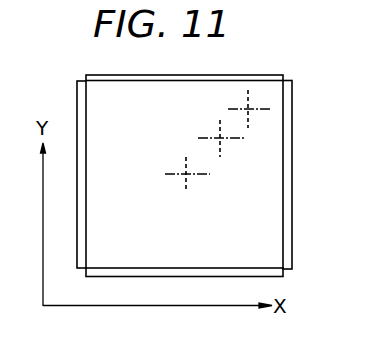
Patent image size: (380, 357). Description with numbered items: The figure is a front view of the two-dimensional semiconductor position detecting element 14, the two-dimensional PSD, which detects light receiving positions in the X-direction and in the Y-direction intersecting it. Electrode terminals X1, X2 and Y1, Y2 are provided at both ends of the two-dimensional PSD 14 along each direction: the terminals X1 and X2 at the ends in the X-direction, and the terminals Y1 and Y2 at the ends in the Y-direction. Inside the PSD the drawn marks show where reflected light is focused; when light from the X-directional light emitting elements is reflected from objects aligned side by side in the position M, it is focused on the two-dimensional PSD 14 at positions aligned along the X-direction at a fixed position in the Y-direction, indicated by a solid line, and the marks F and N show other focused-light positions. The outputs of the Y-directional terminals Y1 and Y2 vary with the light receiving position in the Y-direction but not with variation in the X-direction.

The two-dimensional semiconductor position detecting element 14 is at (300, 90).
The electrode terminal X1 is at (77, 106).
The electrode terminal X2 is at (293, 147).
The electrode terminal Y1 is at (240, 75).
The electrode terminal Y2 is at (219, 277).
The point F mark F is at (187, 179).
The position M is at (221, 141).
The point N mark N is at (251, 111).